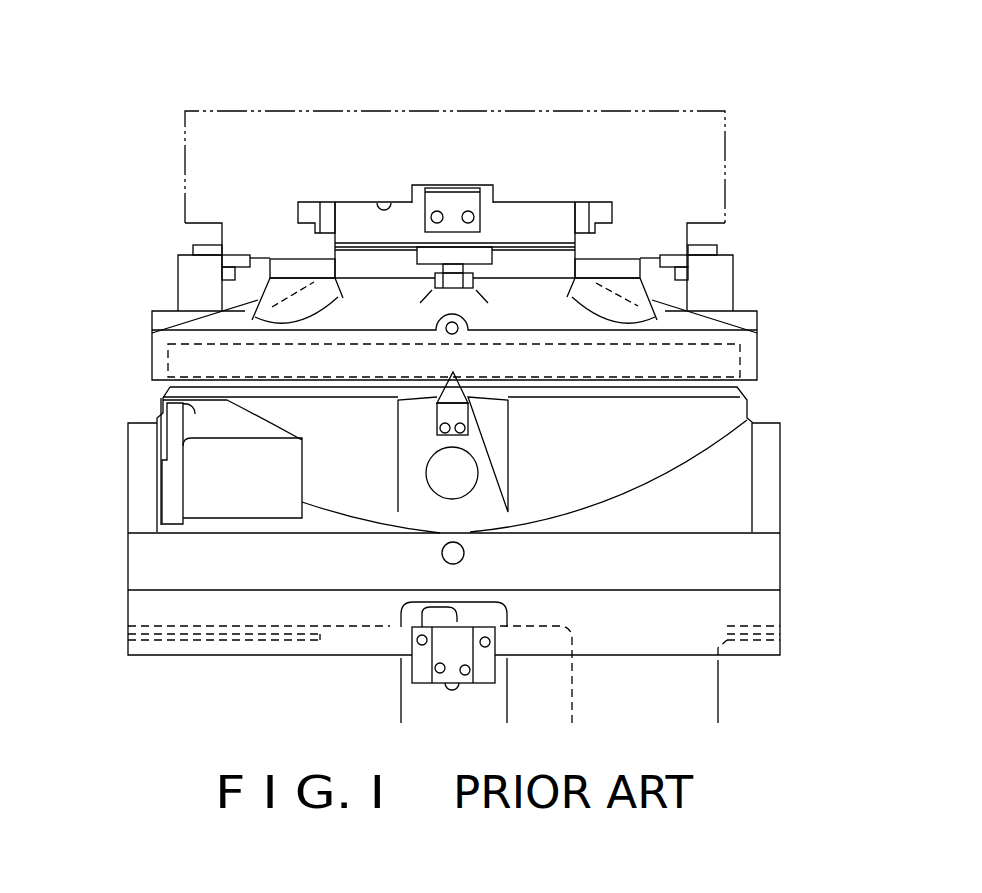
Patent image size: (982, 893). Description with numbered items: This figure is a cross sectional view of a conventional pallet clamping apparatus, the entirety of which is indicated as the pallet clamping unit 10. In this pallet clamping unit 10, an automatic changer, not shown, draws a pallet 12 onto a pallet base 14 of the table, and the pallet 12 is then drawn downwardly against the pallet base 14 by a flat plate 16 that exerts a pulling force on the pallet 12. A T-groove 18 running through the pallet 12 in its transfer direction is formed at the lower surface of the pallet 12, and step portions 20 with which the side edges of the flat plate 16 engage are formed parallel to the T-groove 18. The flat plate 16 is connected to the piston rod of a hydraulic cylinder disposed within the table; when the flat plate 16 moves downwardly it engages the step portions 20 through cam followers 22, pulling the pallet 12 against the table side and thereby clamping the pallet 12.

The pallet clamping unit 10 is at (873, 163).
The pallet 12 is at (725, 152).
The pallet base 14 is at (750, 360).
The flat plate 16 is at (535, 220).
The T-groove 18 is at (376, 203).
The step portions 20 is at (330, 242).
The cam followers 22 is at (327, 207).